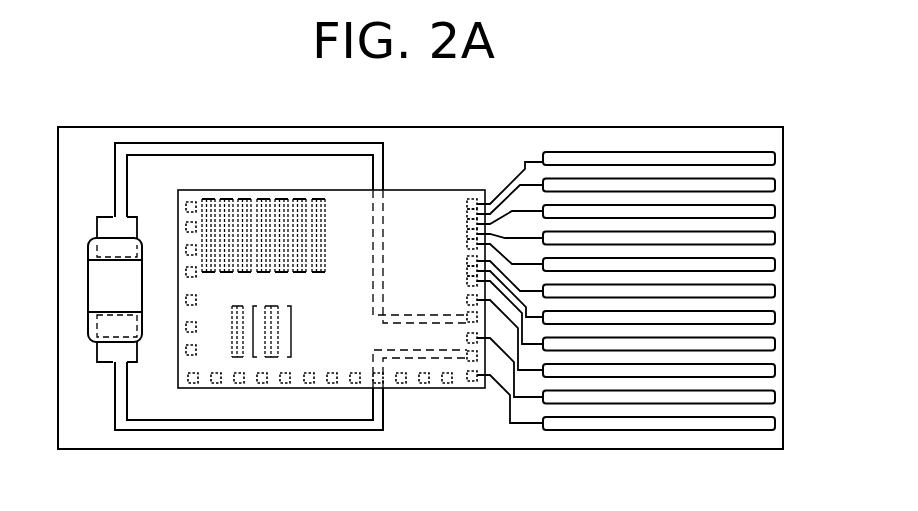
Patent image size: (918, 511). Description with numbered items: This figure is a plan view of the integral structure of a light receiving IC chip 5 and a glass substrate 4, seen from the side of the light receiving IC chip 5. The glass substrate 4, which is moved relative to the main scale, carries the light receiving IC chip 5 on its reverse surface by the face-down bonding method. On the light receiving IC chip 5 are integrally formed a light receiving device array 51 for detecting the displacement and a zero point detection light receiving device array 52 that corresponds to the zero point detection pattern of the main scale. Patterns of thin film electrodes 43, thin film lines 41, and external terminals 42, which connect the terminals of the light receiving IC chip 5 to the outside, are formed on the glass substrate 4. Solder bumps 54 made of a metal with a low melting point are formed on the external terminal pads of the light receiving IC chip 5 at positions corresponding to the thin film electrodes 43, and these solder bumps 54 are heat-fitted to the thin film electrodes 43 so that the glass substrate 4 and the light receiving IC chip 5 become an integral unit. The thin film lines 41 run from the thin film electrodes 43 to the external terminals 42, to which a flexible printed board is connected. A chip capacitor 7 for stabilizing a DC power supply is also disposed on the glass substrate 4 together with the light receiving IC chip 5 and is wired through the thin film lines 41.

The glass substrate 4 is at (508, 433).
The light receiving IC chip 5 is at (457, 192).
The chip capacitor 7 is at (102, 283).
The thin film lines 41 is at (197, 143).
The external terminals 42 is at (652, 160).
The thin film electrodes 43 is at (245, 380).
The light receiving device array 51 is at (280, 198).
The zero point detection light receiving device array 52 is at (292, 333).
The solder bumps 54 is at (470, 385).